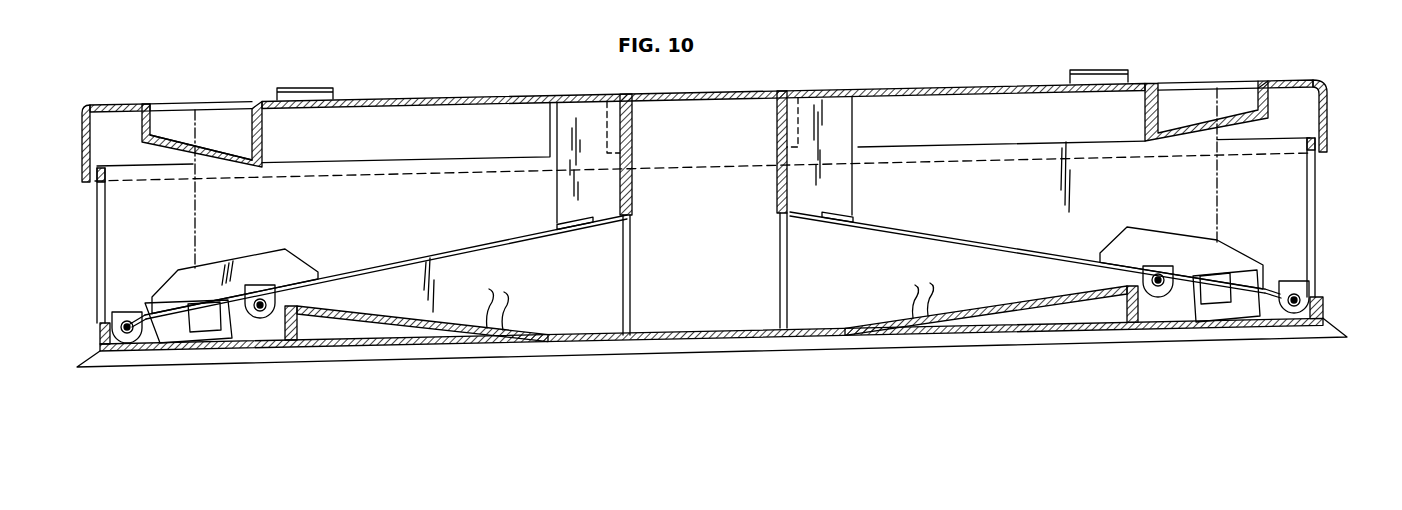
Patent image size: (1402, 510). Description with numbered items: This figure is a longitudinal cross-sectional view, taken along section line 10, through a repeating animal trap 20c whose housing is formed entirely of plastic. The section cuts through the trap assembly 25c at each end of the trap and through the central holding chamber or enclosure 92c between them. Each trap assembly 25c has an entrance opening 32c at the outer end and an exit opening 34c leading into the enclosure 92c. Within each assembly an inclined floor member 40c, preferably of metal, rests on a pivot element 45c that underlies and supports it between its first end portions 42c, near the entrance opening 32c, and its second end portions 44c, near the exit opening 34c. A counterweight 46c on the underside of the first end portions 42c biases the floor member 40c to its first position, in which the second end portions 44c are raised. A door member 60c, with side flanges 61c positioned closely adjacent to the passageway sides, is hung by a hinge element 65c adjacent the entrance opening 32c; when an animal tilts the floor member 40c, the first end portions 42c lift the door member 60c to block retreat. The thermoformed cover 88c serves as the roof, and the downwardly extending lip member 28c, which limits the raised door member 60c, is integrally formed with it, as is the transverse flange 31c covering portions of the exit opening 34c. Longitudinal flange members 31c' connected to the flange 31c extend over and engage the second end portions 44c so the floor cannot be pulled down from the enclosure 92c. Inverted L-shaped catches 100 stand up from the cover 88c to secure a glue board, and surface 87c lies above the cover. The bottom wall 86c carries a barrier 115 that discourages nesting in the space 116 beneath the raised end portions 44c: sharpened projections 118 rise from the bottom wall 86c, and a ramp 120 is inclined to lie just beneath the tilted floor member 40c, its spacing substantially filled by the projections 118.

The section line 10 is at (478, 13).
The repeating animal trap 20c is at (985, 80).
The trap assembly 25c is at (205, 100).
The lip member 28c is at (210, 168).
The transverse flange 31c is at (703, 153).
The longitudinal flange members 31c' is at (747, 160).
The entrance opening 32c is at (143, 228).
The exit opening 34c is at (622, 301).
The floor member 40c is at (387, 258).
The first end portions 42c is at (144, 311).
The second end portions 44c is at (473, 246).
The pivot element 45c is at (259, 312).
The counterweight 46c is at (176, 342).
The door member 60c is at (302, 266).
The flanges 61c is at (277, 262).
The hinge element 65c is at (122, 320).
The bottom wall 86c is at (663, 343).
The top surface 87c is at (877, 0).
The cover 88c is at (412, 98).
The holding chamber or enclosure 92c is at (730, 264).
The inverted L-shaped catches 100 is at (304, 86).
The barrier 115 is at (322, 320).
The space 116 is at (595, 274).
The sharpened projections 118 is at (708, 291).
The ramp 120 is at (387, 322).